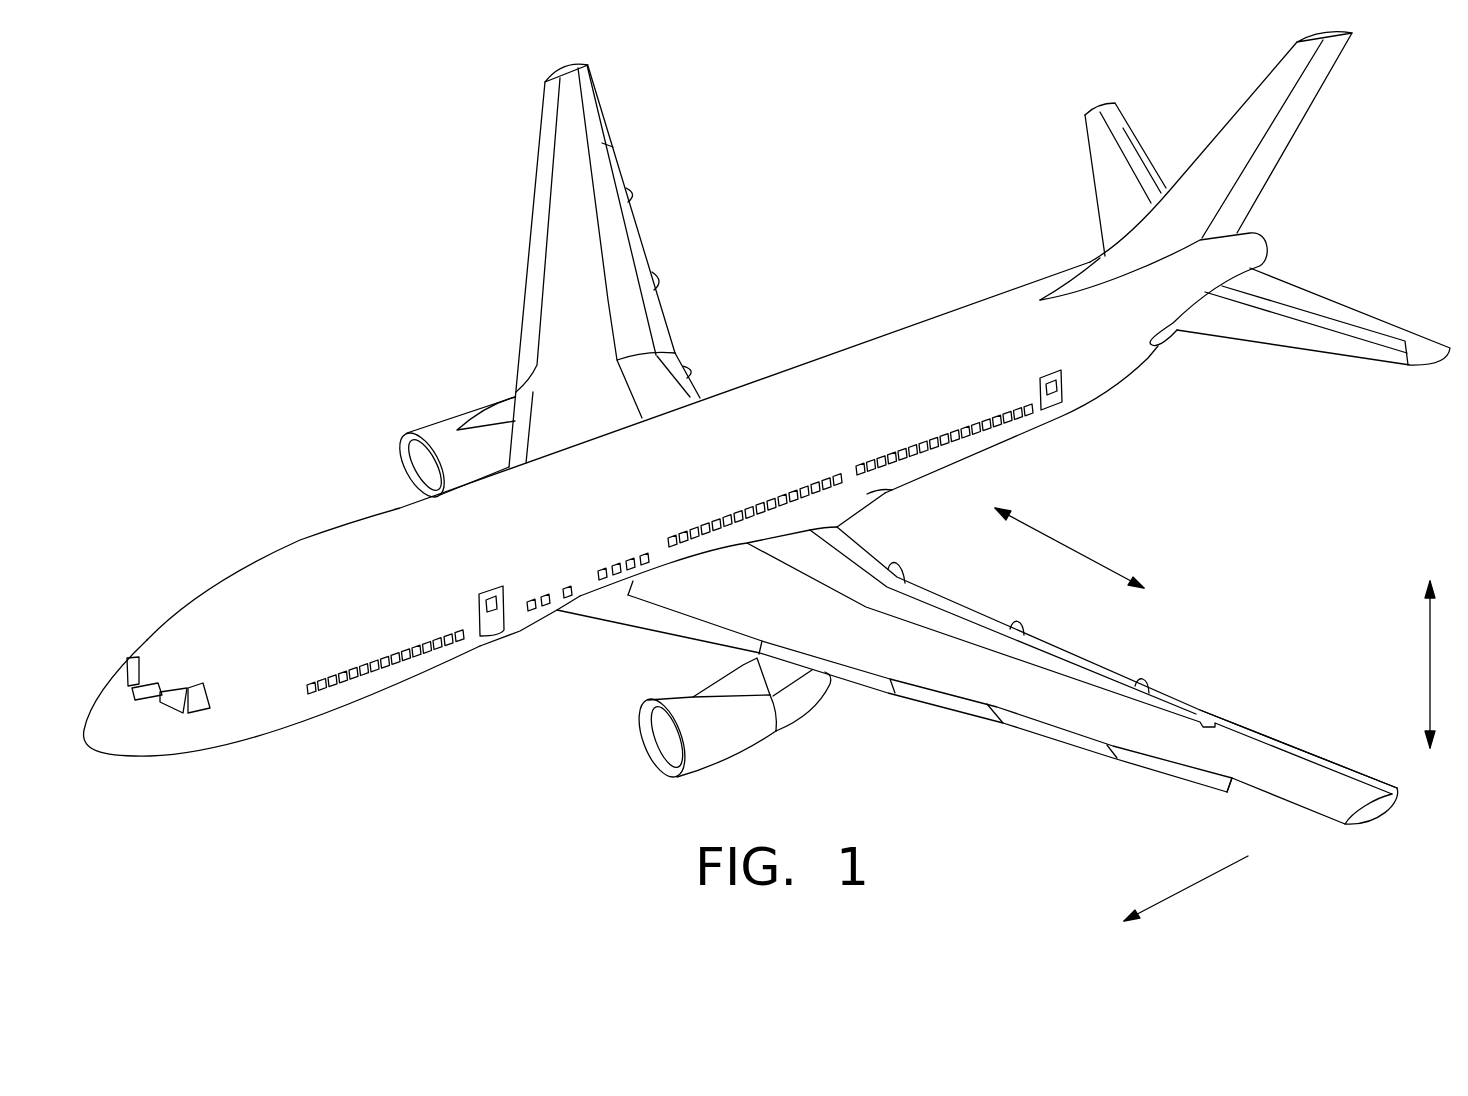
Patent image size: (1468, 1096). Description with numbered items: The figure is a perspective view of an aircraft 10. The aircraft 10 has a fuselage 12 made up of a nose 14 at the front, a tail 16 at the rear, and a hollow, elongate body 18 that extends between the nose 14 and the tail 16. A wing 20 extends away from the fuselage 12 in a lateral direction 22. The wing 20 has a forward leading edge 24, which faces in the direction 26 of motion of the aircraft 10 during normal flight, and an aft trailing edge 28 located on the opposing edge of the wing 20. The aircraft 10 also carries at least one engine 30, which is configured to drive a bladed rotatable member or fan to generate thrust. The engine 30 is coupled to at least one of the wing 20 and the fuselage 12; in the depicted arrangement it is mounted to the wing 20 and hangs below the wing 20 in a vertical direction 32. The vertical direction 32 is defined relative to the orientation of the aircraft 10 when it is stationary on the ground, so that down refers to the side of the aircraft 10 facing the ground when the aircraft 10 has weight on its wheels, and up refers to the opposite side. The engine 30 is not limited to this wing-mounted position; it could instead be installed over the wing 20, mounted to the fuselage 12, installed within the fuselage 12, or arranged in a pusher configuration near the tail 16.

The aircraft 10 is at (370, 280).
The fuselage 12 is at (790, 410).
The nose 14 is at (202, 628).
The tail 16 is at (1137, 367).
The hollow, elongate body 18 is at (526, 551).
The wing 20 is at (1000, 700).
The lateral direction 22 is at (1058, 538).
The forward leading edge 24 is at (1232, 793).
The direction of motion 26 is at (1196, 883).
The aft trailing edge 28 is at (1282, 742).
The engine 30 is at (707, 737).
The vertical direction 32 is at (1428, 660).